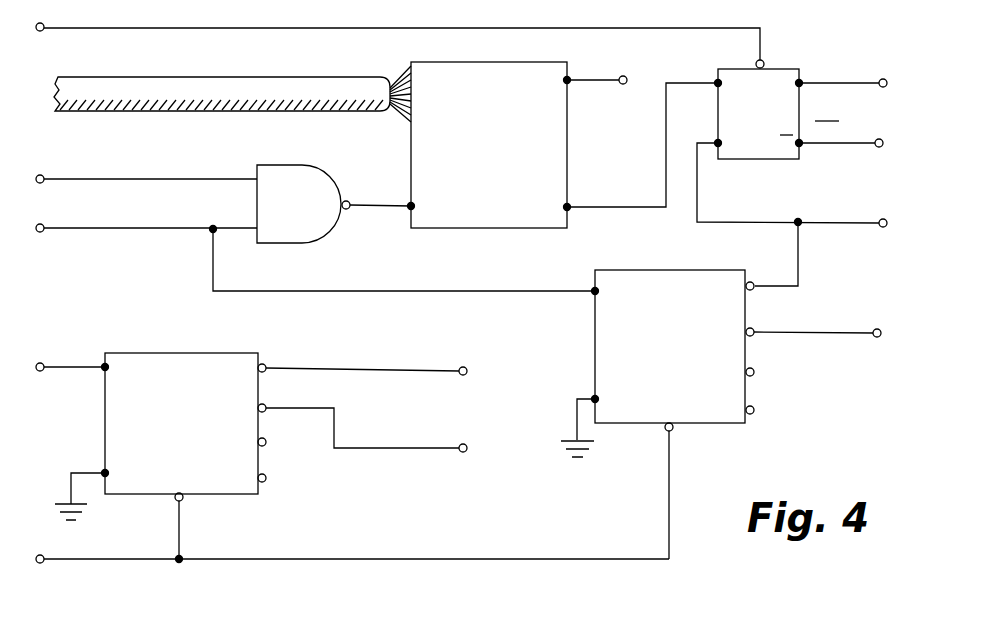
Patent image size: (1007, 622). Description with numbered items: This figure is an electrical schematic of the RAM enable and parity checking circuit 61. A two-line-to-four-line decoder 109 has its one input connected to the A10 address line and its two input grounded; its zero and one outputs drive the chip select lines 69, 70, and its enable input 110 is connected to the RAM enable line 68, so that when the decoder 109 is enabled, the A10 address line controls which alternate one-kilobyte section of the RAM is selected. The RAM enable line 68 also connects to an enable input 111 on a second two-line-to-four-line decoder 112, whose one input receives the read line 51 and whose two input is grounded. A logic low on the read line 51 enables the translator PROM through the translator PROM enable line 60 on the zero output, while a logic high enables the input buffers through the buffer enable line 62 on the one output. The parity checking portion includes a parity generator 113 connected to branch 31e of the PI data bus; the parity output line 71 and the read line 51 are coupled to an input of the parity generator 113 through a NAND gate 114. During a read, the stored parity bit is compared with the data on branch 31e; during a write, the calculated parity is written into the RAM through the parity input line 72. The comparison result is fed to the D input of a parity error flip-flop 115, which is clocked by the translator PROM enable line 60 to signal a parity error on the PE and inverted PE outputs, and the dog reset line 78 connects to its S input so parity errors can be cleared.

The dog reset line 78 is at (42, 31).
The branch of the PI data bus 31e is at (212, 76).
The parity output line 71 is at (40, 175).
The read line 51 is at (42, 232).
The NAND gate 114 is at (302, 221).
The parity generator 113 is at (492, 203).
The parity input line 72 is at (622, 85).
The parity error flip-flop 115 is at (768, 127).
The RAM enable and parity checking circuit 61 is at (832, 39).
The translator PROM enable line 60 is at (881, 227).
The buffer enable line 62 is at (875, 338).
The 2-line-to-4-line decoder 112 is at (678, 317).
The enable input 111 is at (673, 430).
The 2-line-to-4-line decoder 109 is at (188, 397).
The enable input 110 is at (183, 500).
The chip select line 69 is at (468, 372).
The chip select line 70 is at (468, 449).
The RAM enable line 68 is at (42, 563).